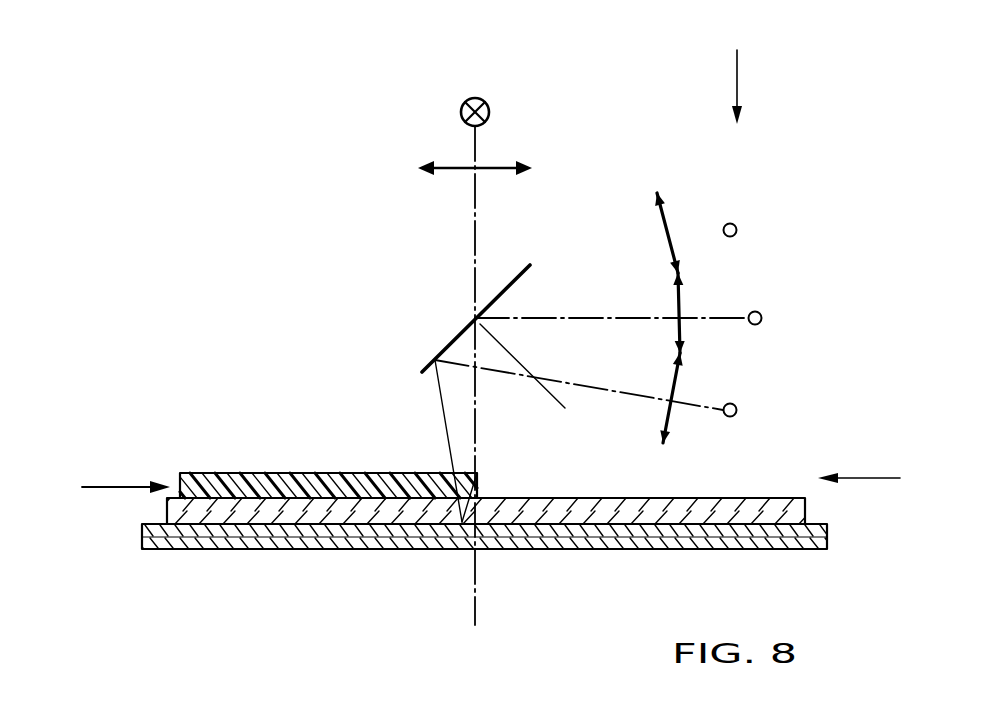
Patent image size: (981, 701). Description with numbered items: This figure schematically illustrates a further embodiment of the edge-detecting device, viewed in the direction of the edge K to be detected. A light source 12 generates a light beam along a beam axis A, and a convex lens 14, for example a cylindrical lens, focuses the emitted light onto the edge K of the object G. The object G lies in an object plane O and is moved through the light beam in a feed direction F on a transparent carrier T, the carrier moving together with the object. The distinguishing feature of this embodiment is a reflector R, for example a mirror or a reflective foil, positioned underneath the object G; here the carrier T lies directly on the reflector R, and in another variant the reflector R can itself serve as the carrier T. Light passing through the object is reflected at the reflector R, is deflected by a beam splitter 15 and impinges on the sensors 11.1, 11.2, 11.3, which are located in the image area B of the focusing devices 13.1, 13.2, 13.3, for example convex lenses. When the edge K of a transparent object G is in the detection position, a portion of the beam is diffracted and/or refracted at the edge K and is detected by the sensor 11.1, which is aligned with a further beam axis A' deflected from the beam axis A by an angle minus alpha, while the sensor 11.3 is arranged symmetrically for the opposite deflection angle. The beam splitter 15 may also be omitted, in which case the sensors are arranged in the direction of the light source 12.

The light source 12 is at (490, 109).
The convex lens 14 is at (495, 149).
The beam splitter 15 is at (515, 271).
The beam axis A is at (443, 376).
The further beam axis A' is at (579, 407).
The image area B is at (736, 71).
The feed direction F is at (112, 485).
The object G is at (283, 486).
The edge K is at (479, 480).
The object plane O is at (871, 484).
The reflector R is at (196, 536).
The transparent carrier T is at (297, 512).
The sensor 11.1 is at (737, 410).
The sensor 11.2 is at (762, 318).
The sensor 11.3 is at (737, 230).
The focusing device 13.1 is at (678, 383).
The focusing device 13.2 is at (682, 302).
The focusing device 13.3 is at (670, 232).